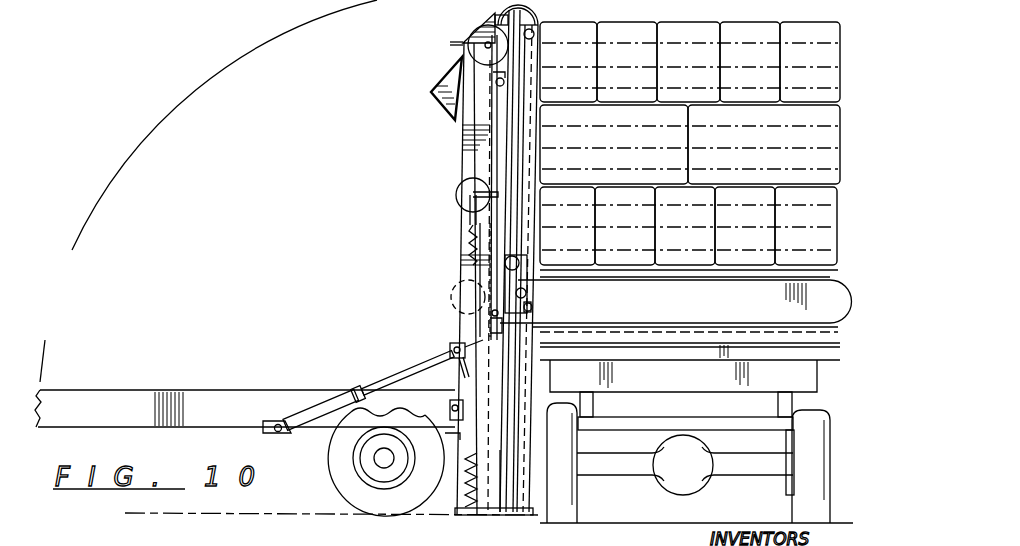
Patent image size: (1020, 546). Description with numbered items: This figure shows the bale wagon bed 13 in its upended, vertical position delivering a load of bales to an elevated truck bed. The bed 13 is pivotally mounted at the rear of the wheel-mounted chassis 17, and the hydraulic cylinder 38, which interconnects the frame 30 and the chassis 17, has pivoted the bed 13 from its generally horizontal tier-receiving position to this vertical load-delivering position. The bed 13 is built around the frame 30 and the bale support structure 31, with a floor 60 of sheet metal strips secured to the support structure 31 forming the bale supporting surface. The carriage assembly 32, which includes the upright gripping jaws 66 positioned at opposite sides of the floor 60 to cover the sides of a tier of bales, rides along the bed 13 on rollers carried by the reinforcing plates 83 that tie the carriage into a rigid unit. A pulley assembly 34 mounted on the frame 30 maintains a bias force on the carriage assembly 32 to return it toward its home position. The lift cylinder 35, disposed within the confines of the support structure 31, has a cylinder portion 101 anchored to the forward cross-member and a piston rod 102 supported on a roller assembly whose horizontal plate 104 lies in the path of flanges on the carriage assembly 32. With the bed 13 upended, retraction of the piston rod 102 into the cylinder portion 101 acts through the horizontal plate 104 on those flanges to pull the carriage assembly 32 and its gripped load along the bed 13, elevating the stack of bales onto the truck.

The bale wagon bed 13 is at (452, 238).
The chassis 17 is at (213, 418).
The frame 30 is at (483, 494).
The bale support structure 31 is at (507, 494).
The carriage assembly 32 is at (510, 336).
The pulley assembly 34 is at (455, 160).
The lift cylinder 35 is at (531, 87).
The hydraulic cylinder 38 is at (350, 392).
The floor 60 is at (535, 151).
The gripping jaw 66 is at (764, 304).
The reinforcing plate 83 is at (519, 288).
The cylinder portion 101 is at (531, 117).
The piston rod 102 is at (524, 268).
The horizontal plate 104 is at (532, 306).